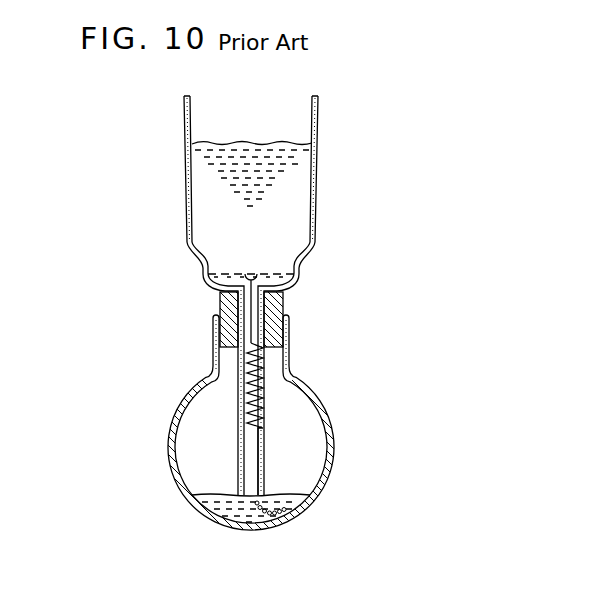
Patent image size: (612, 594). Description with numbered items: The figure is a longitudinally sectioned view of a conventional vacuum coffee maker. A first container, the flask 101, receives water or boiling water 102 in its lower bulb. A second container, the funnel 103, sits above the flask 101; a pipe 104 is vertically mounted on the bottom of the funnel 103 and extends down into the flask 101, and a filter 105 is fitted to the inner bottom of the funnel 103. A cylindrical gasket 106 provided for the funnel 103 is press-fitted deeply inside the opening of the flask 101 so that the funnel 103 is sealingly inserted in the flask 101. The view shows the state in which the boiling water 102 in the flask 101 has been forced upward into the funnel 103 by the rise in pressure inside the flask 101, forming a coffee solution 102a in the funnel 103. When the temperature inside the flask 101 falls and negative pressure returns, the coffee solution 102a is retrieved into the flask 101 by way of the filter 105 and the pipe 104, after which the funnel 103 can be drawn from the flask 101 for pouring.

The first container (flask) 101 is at (333, 438).
The water (boiling water) 102 is at (297, 493).
The coffee solution 102a is at (303, 180).
The second container (funnel) 103 is at (320, 130).
The pipe 104 is at (265, 393).
The filter 105 is at (265, 273).
The cylindrical gasket 106 is at (282, 302).